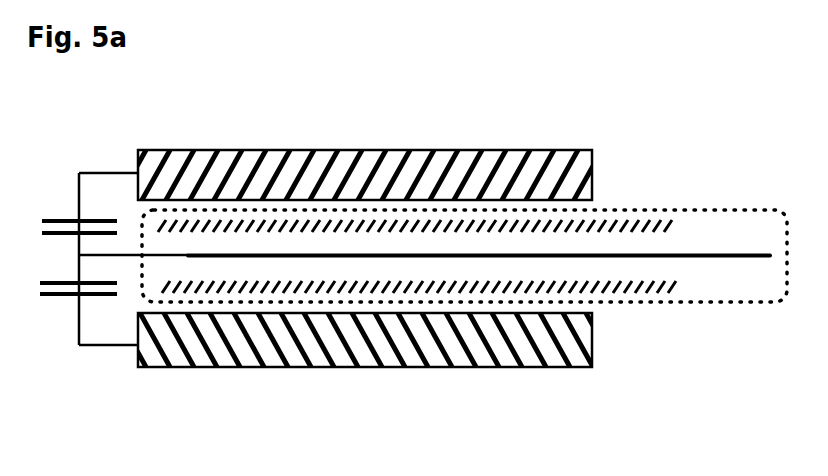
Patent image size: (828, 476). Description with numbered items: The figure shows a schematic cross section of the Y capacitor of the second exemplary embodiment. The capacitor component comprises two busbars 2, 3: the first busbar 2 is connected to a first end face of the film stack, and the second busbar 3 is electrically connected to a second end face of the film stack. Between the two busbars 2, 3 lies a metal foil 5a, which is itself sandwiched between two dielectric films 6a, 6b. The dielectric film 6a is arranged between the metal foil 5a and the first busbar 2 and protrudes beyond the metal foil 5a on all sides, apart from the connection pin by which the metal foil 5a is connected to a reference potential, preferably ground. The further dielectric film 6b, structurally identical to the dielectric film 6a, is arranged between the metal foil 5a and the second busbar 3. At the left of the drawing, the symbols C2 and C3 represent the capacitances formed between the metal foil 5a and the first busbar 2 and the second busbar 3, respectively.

The first busbar 2 is at (325, 149).
The second busbar 3 is at (303, 367).
The metal foil 5a is at (724, 257).
The dielectric film 6a is at (648, 228).
The further dielectric film 6b is at (643, 289).
The capacitor C2 is at (60, 221).
The capacitor C3 is at (58, 296).